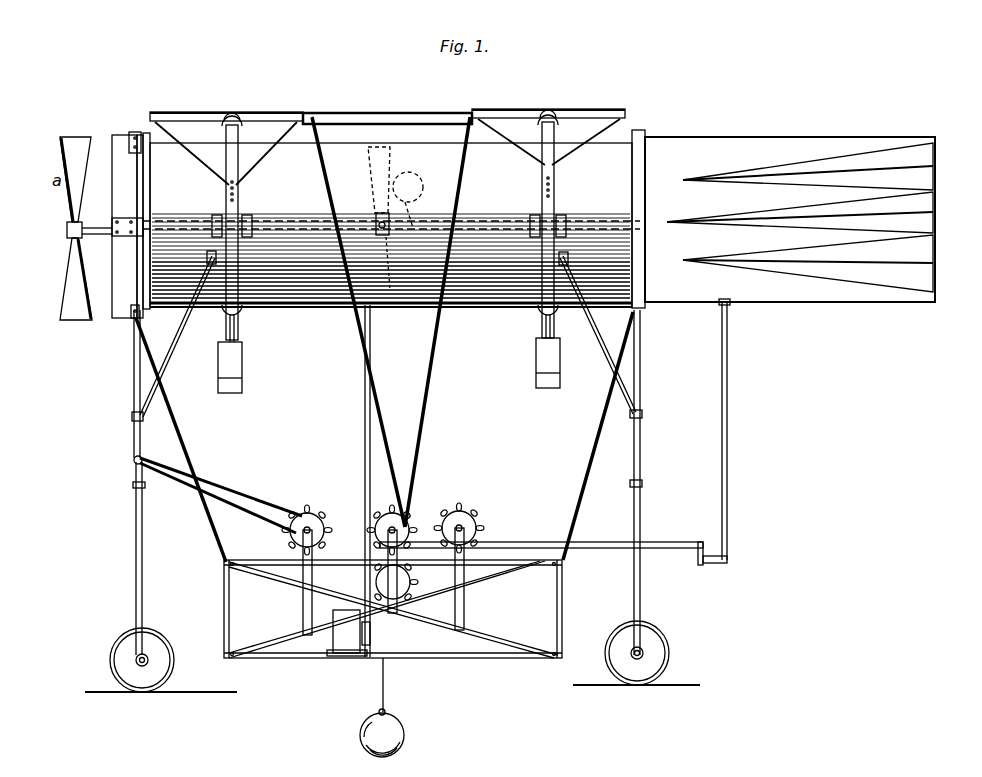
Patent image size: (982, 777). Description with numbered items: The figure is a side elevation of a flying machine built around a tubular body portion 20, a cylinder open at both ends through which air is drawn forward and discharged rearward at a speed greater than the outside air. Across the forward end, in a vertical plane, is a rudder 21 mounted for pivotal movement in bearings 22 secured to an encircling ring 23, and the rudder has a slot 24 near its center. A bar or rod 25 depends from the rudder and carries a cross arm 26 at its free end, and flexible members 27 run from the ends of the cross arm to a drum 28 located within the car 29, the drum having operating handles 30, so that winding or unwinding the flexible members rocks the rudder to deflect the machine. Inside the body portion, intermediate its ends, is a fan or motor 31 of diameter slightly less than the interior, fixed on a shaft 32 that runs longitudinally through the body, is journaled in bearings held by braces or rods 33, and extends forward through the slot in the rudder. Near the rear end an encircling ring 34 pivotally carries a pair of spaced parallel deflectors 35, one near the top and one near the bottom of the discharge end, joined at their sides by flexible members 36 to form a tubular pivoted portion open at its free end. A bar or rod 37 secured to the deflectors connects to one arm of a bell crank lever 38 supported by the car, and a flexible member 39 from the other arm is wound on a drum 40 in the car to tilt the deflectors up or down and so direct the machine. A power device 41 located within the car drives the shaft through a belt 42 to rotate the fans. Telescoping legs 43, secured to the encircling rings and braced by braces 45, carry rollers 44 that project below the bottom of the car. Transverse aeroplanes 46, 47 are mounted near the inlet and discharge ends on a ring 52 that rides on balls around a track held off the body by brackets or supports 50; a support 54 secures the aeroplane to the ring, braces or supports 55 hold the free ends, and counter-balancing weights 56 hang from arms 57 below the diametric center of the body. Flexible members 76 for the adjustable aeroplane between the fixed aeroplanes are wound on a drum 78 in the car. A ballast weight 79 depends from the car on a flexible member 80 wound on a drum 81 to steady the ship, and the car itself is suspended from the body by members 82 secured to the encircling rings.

The tubular body portion 20 is at (478, 302).
The rudder 21 is at (122, 150).
The bearings 22 is at (137, 133).
The encircling ring 23 is at (150, 205).
The slot 24 is at (122, 226).
The bar or rod 25 is at (133, 364).
The cross arm 26 is at (134, 460).
The flexible members 27 is at (243, 510).
The drum 28 is at (309, 516).
The car 29 is at (304, 659).
The operating handles 30 is at (329, 529).
The fan or motor 31 is at (392, 162).
The shaft 32 is at (104, 233).
The braces or rods 33 is at (74, 180).
The encircling ring 34 is at (648, 137).
The deflectors 35 is at (848, 150).
The flexible members 36 is at (925, 269).
The bar or rod 37 is at (731, 450).
The bell crank lever 38 is at (714, 563).
The flexible member 39 is at (685, 541).
The drum 40 is at (478, 530).
The motor 41 is at (352, 642).
The belt 42 is at (364, 426).
The legs 43 is at (135, 499).
The rollers 44 is at (162, 665).
The braces 45 is at (180, 333).
The aeroplane 46 is at (250, 112).
The aeroplane 47 is at (575, 110).
The brackets or supports 50 is at (243, 128).
The ring 52 is at (226, 208).
The support 54 is at (232, 120).
The braces or supports 55 is at (244, 160).
The counter-balancing weights 56 is at (243, 369).
The arms 57 is at (240, 332).
The flexible members 76 is at (423, 407).
The drum 78 is at (410, 522).
The ballast weight 79 is at (404, 733).
The flexible member 80 is at (386, 690).
The drum 81 is at (412, 582).
The members 82 is at (182, 437).